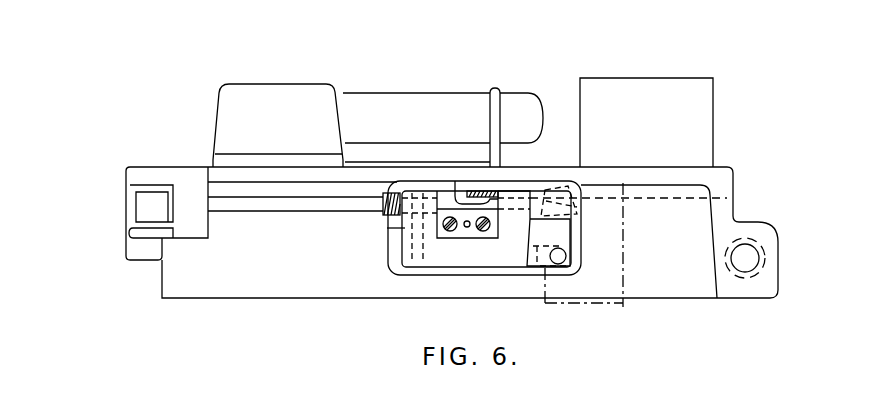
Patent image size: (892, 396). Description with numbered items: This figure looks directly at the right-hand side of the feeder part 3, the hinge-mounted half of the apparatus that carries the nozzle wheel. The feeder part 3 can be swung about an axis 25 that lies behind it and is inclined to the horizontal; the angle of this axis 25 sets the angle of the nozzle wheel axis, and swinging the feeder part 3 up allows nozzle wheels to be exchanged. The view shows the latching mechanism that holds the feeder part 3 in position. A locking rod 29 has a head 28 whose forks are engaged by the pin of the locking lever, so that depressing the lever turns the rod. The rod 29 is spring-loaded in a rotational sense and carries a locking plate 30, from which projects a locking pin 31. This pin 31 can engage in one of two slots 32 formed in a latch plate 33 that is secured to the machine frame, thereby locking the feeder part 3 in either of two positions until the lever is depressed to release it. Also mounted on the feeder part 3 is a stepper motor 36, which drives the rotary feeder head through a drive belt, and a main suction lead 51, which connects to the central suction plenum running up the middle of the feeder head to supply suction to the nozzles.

The feeder part 3 is at (182, 167).
The axis 25 is at (745, 256).
The head 28 is at (150, 203).
The locking rod 29 is at (350, 203).
The locking plate 30 is at (460, 258).
The locking pin 31 is at (565, 272).
The slots 32 is at (580, 220).
The latch plate 33 is at (605, 280).
The stepper motor 36 is at (678, 103).
The main suction lead 51 is at (445, 115).